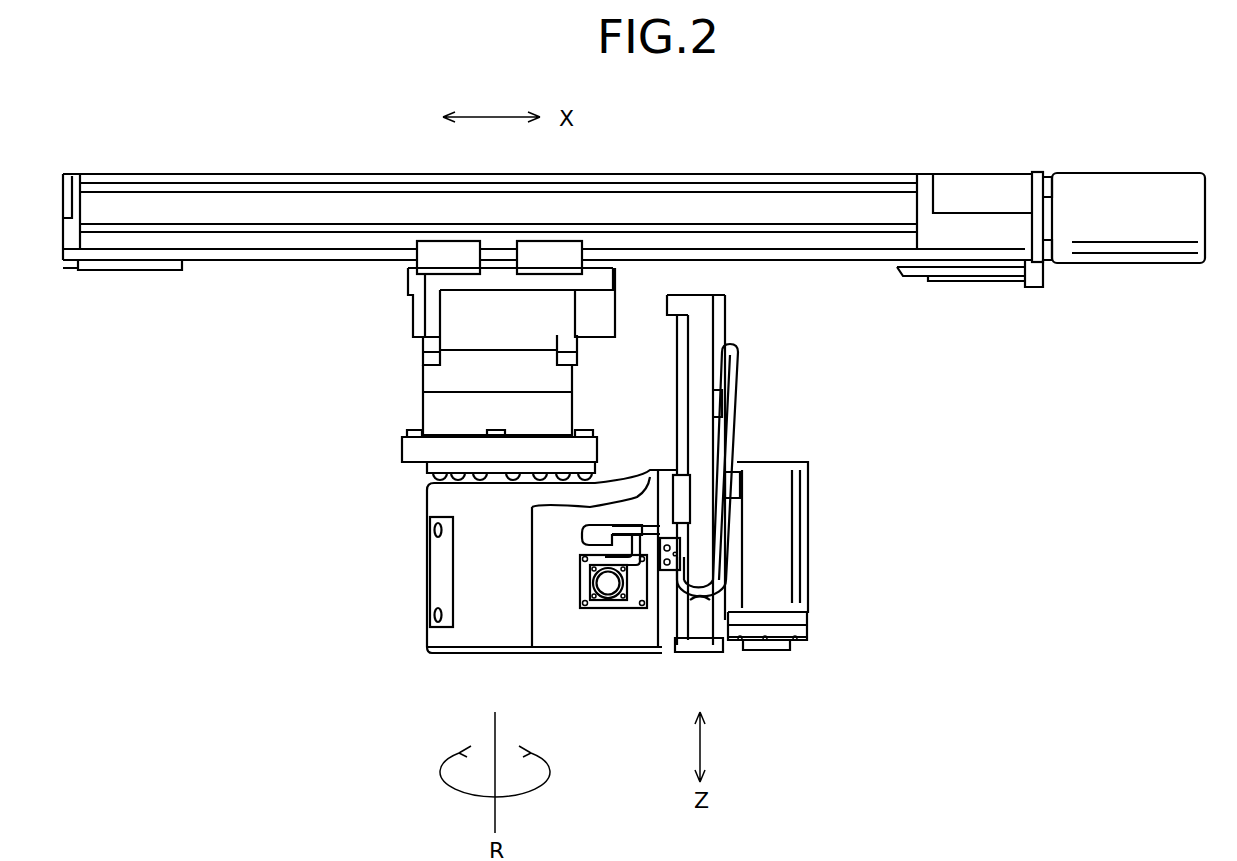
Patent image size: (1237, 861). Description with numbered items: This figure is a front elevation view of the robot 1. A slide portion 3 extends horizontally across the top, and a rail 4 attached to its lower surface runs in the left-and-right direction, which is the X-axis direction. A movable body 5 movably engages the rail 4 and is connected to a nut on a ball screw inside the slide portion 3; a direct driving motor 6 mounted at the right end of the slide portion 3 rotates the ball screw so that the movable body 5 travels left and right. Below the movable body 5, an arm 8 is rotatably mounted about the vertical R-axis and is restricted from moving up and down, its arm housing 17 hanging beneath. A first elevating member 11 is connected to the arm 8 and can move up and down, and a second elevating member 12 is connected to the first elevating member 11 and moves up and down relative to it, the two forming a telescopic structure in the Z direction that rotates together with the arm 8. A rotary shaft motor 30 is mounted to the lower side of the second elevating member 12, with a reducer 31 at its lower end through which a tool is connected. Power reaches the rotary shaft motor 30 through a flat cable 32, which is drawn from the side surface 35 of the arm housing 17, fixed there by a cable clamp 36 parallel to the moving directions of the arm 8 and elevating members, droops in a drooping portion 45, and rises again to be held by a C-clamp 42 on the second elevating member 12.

The robot 1 is at (386, 686).
The slide portion 3 is at (821, 176).
The rail 4 is at (225, 262).
The movable body 5 is at (430, 378).
The direct driving motor 6 is at (1124, 181).
The arm 8 is at (457, 655).
The first elevating member 11 is at (683, 372).
The second elevating member 12 is at (702, 627).
The arm housing 17 is at (483, 655).
The rotary shaft motor 30 is at (800, 503).
The reducer 31 is at (800, 620).
The flat cable 32 is at (640, 525).
The side surface 35 is at (602, 522).
The cable clamp 36 is at (667, 537).
The C-clamp 42 is at (718, 405).
The drooping portion 45 is at (690, 607).